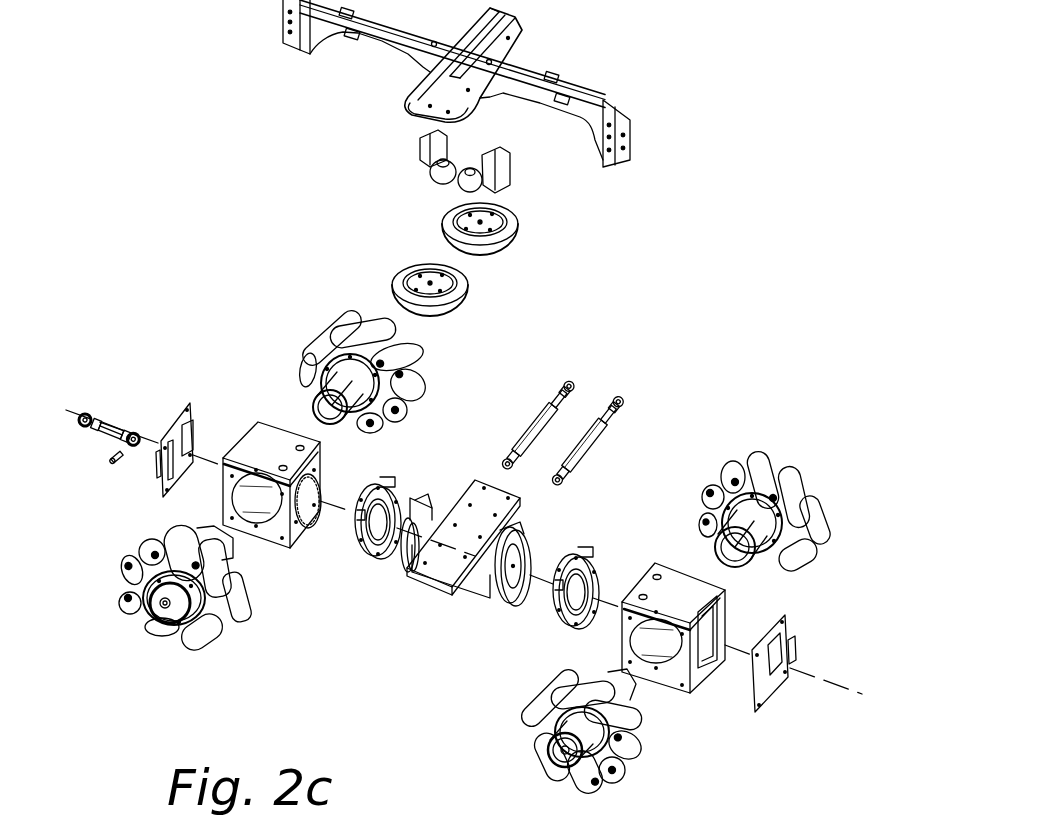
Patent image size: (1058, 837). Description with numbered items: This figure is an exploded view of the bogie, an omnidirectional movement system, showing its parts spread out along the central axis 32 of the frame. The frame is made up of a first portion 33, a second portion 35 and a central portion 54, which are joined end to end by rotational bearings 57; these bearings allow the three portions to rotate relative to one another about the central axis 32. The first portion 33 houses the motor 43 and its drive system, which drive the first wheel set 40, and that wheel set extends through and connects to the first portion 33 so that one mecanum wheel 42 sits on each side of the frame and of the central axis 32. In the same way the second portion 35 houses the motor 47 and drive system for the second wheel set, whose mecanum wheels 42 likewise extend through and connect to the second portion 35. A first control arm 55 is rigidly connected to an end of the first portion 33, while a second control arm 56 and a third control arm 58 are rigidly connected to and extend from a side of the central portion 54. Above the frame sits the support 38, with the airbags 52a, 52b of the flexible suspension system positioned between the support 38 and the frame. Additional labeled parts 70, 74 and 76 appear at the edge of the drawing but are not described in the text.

The central axis 32 is at (835, 693).
The first portion 33 is at (263, 567).
The second portion 35 is at (700, 708).
The support 38 is at (557, 80).
The first wheel set 40 is at (107, 660).
The mecanum wheels 42 is at (350, 300).
The motor 43 is at (300, 377).
The motor 47 is at (715, 525).
The airbag 52a is at (452, 299).
The airbag 52b is at (508, 232).
The central portion 54 is at (425, 595).
The first control arm 55 is at (110, 447).
The second control arm 56 is at (574, 390).
The rotational bearings 57 is at (350, 550).
The third control arm 58 is at (622, 405).
The component 70 is at (858, 836).
The component 74 is at (801, 825).
The component 76 is at (634, 831).